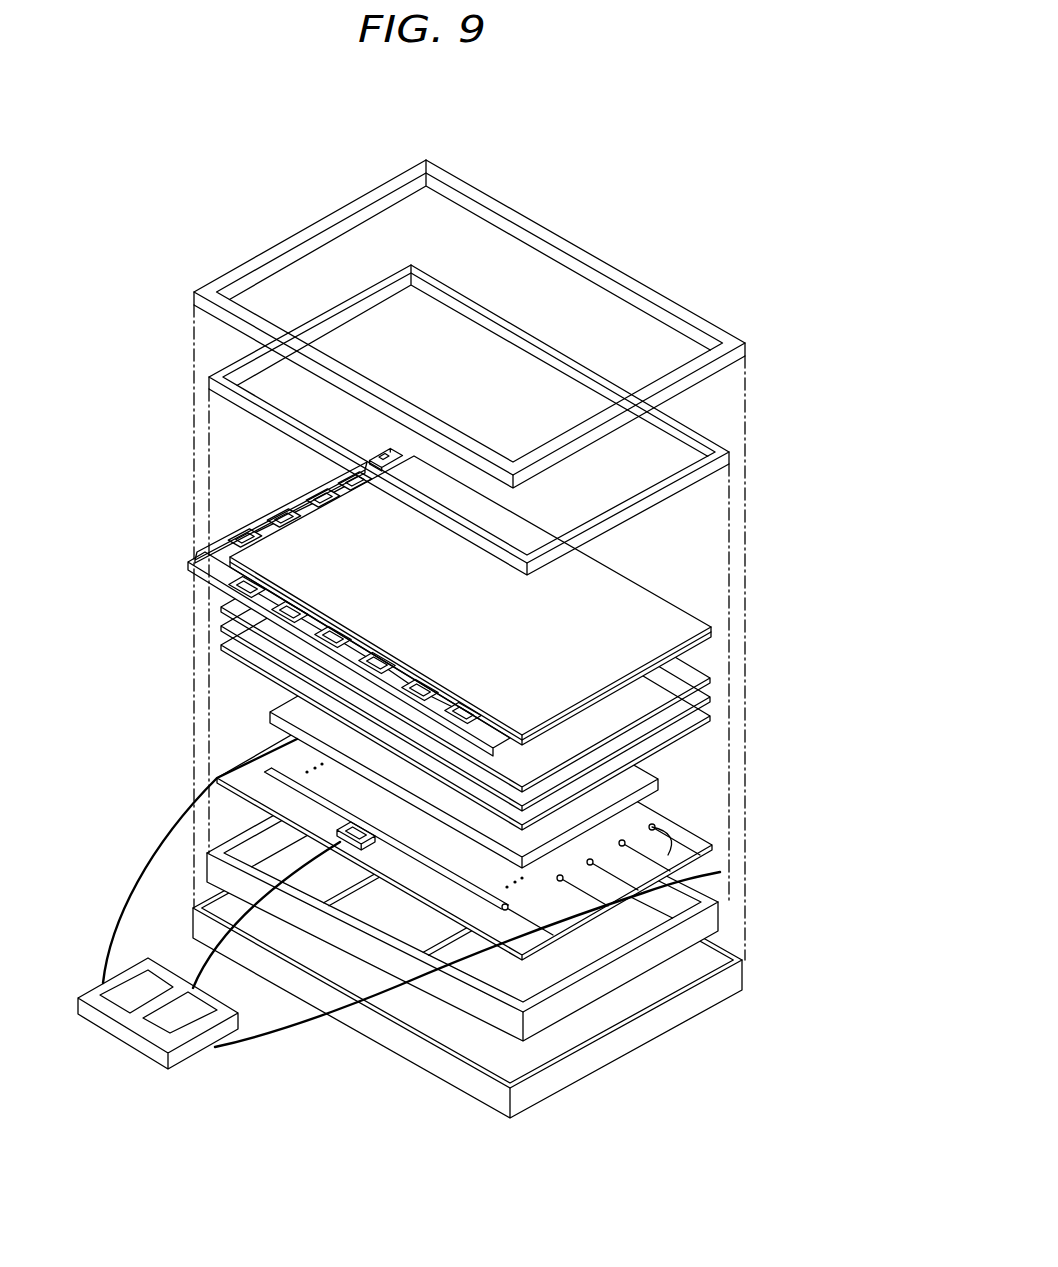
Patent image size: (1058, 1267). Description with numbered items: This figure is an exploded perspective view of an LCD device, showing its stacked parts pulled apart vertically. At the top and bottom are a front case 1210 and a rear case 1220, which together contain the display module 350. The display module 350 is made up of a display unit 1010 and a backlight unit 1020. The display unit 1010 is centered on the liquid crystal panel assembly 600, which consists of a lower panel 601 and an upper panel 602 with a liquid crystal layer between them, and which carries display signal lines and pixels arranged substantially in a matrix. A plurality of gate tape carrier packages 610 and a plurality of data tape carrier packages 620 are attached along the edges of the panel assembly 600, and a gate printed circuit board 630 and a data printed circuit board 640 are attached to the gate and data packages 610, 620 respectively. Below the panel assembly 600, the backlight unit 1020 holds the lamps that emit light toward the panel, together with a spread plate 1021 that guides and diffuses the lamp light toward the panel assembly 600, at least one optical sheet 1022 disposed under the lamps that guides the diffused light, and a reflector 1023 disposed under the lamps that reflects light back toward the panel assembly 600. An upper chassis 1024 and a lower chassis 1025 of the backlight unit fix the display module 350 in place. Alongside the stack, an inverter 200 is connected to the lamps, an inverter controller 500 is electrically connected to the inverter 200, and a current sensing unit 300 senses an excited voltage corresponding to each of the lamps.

The front case 1210 is at (546, 236).
The upper chassis 1024 is at (720, 468).
The display unit 1010 is at (648, 578).
The liquid crystal panel assembly 600 is at (521, 600).
The upper panel 602 is at (713, 629).
The lower panel 601 is at (713, 639).
The gate tape carrier packages 610 is at (283, 503).
The gate printed circuit board 630 is at (298, 497).
The data tape carrier packages 620 is at (190, 566).
The data printed circuit board 640 is at (212, 588).
The display module 350 is at (86, 857).
The backlight unit 1020 is at (848, 658).
The optical sheet 1022 is at (752, 680).
The spread plate 1021 is at (653, 785).
The reflector 1023 is at (532, 814).
The current sensing unit 300 is at (368, 858).
The lower chassis 1025 is at (712, 920).
The rear case 1220 is at (667, 1020).
The inverter 200 is at (103, 1008).
The inverter controller 500 is at (145, 1033).